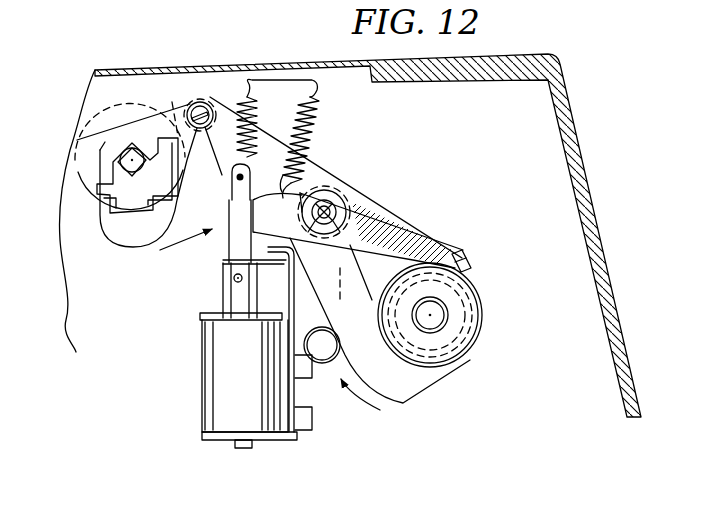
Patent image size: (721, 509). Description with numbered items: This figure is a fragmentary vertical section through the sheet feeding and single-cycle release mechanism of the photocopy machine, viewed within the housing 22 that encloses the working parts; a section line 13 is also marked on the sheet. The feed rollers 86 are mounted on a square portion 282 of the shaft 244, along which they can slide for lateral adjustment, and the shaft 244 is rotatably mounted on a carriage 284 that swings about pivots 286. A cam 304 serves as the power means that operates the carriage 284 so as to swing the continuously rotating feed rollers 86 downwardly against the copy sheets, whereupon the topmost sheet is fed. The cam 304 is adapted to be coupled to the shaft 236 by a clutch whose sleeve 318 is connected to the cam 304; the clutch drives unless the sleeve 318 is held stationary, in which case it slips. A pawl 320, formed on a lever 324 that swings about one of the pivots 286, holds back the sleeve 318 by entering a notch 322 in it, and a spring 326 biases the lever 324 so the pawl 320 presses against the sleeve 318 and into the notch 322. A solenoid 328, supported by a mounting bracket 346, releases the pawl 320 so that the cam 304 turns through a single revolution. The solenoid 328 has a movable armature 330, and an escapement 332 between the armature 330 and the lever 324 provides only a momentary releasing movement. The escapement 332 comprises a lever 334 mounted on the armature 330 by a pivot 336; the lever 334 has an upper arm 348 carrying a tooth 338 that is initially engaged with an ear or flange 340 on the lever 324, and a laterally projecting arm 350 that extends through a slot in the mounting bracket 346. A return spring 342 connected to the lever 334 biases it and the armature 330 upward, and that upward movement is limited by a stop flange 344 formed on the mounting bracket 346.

The section line 13- 13 is at (335, 50).
The housing 22 is at (583, 195).
The feed rollers 86 is at (92, 201).
The shaft 236 is at (437, 320).
The shaft 244 is at (122, 160).
The square portion 282 is at (120, 130).
The carriage 284 is at (185, 87).
The pivots 286 is at (341, 195).
The cam 304 is at (426, 394).
The sleeve 318 is at (482, 295).
The pawl 320 is at (462, 255).
The notch 322 is at (464, 266).
The lever 324 is at (382, 212).
The spring 326 is at (255, 128).
The solenoid 328 is at (232, 385).
The armature 330 is at (205, 317).
The escapement 332 is at (228, 244).
The lever 334 is at (223, 264).
The pivot 336 is at (234, 279).
The tooth 338 is at (292, 187).
The flange 340 is at (247, 214).
The return spring 342 is at (212, 103).
The stop flange 344 is at (272, 250).
The mounting bracket 346 is at (296, 400).
The upper arm 348 is at (280, 177).
The laterally projecting arm 350 is at (281, 275).